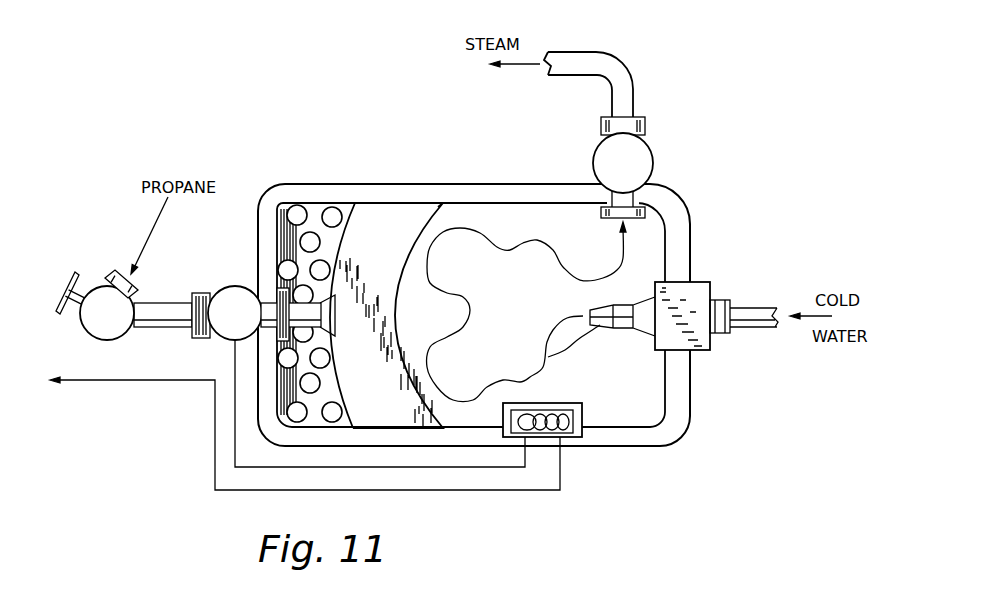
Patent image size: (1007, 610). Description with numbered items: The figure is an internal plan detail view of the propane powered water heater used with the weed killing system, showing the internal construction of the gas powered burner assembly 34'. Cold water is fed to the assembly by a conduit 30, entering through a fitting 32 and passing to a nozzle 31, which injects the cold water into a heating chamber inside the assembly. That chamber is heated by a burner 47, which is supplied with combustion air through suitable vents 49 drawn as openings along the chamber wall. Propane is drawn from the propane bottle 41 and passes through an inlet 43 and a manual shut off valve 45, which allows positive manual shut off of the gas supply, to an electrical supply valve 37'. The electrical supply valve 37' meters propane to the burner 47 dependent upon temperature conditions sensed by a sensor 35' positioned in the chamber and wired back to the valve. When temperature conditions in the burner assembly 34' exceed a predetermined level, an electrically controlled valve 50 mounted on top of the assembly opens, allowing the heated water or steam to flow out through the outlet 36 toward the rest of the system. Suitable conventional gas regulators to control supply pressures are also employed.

The conduit 30 is at (740, 307).
The nozzle 31 is at (593, 326).
The inlet fitting block 32 is at (700, 282).
The burner assembly 34' is at (386, 276).
The sensor 35' is at (574, 447).
The outlet 36 is at (618, 70).
The electrical supply valve 37' is at (231, 287).
The propane bottle 41 is at (140, 300).
The inlet 43 is at (115, 268).
The manual shut off valve 45 is at (58, 290).
The burner 47 is at (413, 207).
The vents 49 is at (297, 207).
The electrically controlled valve 50 is at (648, 130).